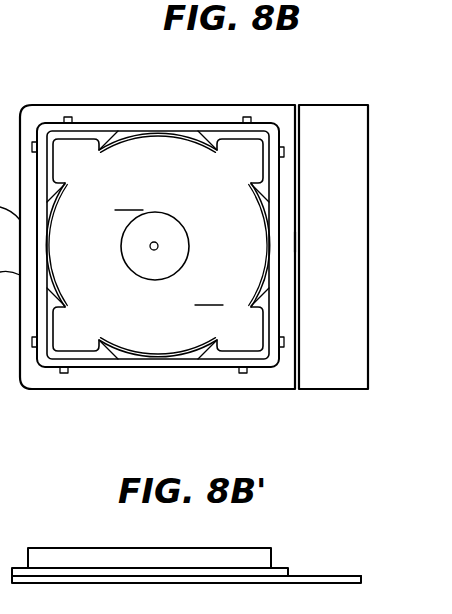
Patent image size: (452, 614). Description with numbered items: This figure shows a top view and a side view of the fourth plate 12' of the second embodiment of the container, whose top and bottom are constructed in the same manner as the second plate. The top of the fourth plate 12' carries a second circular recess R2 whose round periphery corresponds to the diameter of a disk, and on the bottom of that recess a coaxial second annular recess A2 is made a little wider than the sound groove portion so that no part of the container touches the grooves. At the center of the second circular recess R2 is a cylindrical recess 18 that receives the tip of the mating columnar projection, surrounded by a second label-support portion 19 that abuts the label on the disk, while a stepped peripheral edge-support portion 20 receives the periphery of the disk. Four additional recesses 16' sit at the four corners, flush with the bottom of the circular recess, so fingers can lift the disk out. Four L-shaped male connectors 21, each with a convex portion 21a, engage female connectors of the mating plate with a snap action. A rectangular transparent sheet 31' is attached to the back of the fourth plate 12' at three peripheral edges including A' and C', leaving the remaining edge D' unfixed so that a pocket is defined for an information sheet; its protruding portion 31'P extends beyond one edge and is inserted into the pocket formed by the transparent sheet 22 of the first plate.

In FIG. 8B', the fourth plate 12' is at (149, 542).
In FIG. 8B, the additional recesses 16' is at (168, 245).
In FIG. 8B, the cylindrical recess 18 is at (152, 250).
In FIG. 8B, the second label-support portion 19 is at (167, 223).
In FIG. 8B, the peripheral edge-support portion 20 is at (155, 133).
In FIG. 8B, the male connectors 21 is at (52, 125).
In FIG. 8B, the convex portion 21a is at (70, 117).
In FIG. 8B, the transparent sheet 22 is at (18, 0).
In FIG. 8B, the transparent sheet 31' is at (185, 270).
In FIG. 8B', the transparent sheet 31' is at (186, 593).
In FIG. 8B, the protruding portion 31'P is at (333, 227).
In FIG. 8B', the protruding portion 31'P is at (324, 556).
In FIG. 8B, the peripheral edge A' is at (159, 85).
In FIG. 8B, the peripheral edge C' is at (165, 406).
In FIG. 8B, the remaining edge D' is at (312, 244).
In FIG. 8B', the remaining edge D' is at (159, 548).
In FIG. 8B, the second circular recess R2 is at (129, 199).
In FIG. 8B, the second annular recess A2 is at (209, 294).